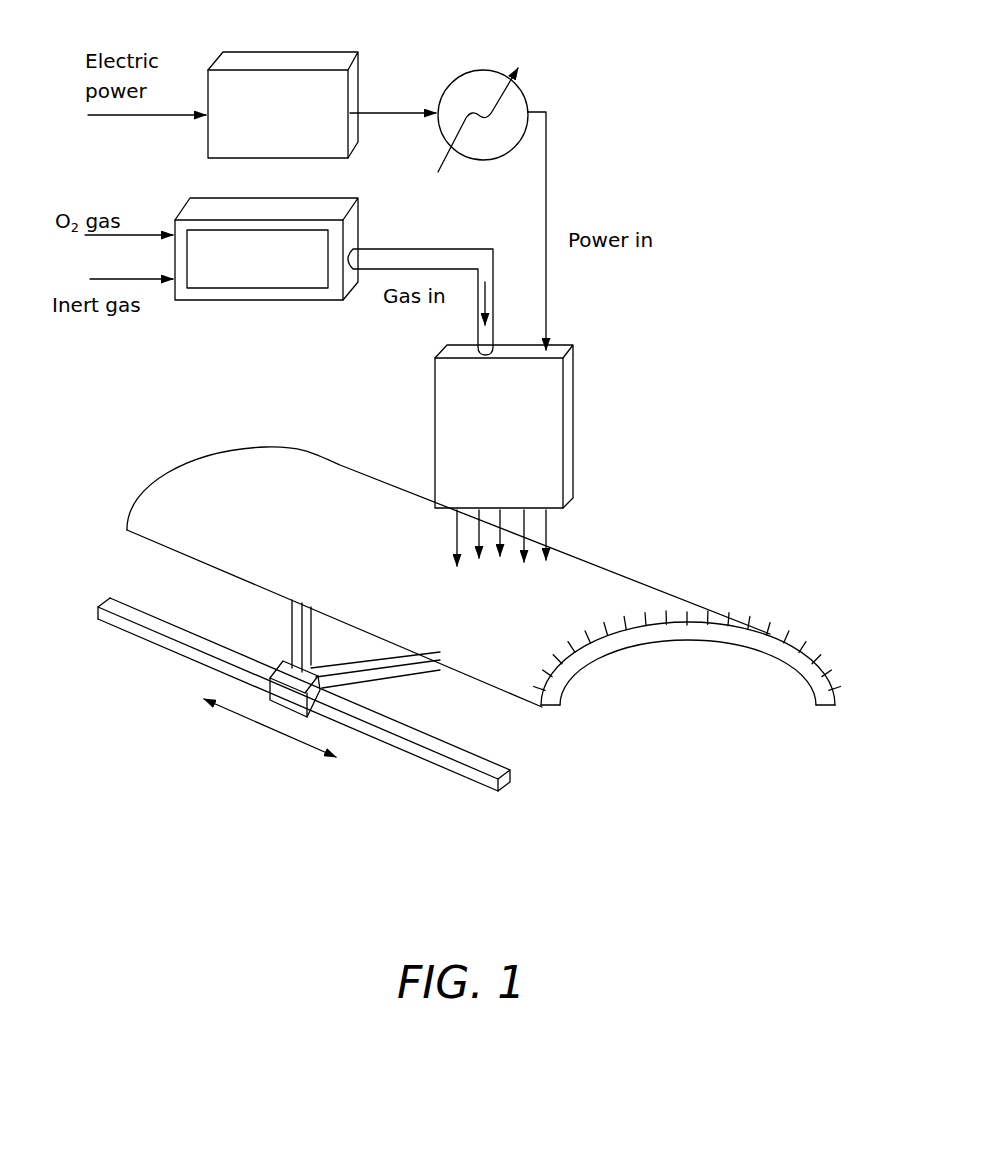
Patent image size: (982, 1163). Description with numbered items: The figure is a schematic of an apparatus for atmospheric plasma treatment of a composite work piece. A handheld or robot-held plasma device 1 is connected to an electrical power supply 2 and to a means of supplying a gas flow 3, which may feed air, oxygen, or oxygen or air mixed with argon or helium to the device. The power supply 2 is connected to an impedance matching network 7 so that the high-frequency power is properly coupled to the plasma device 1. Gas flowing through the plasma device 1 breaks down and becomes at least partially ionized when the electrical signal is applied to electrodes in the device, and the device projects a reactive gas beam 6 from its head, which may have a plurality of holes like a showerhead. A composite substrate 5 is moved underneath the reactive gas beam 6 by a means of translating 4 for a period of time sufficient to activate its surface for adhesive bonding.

The plasma device 1 is at (568, 436).
The electrical power supply 2 is at (316, 66).
The means of supplying a gas flow 3 is at (282, 304).
The means of translating 4 is at (284, 713).
The composite substrate 5 is at (526, 662).
The reactive gas beam 6 is at (556, 538).
The impedance matching network 7 is at (488, 104).